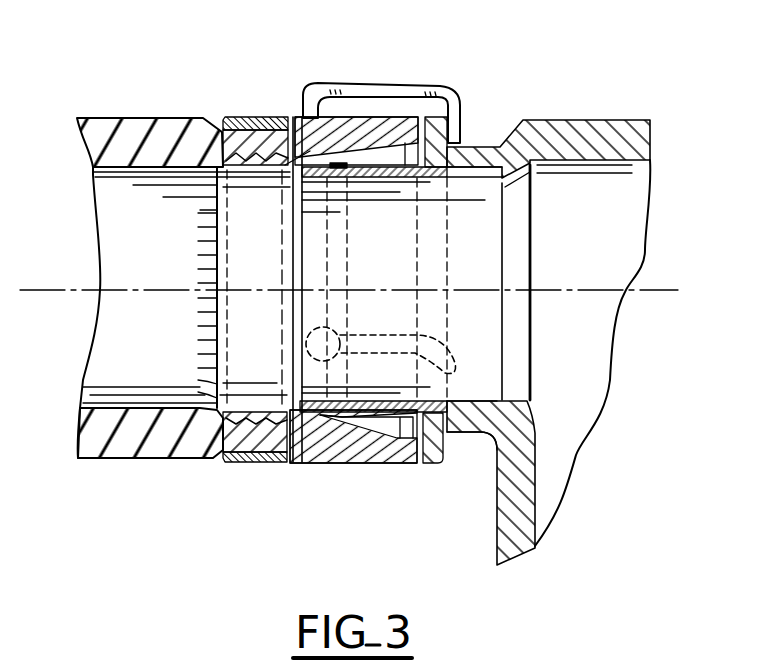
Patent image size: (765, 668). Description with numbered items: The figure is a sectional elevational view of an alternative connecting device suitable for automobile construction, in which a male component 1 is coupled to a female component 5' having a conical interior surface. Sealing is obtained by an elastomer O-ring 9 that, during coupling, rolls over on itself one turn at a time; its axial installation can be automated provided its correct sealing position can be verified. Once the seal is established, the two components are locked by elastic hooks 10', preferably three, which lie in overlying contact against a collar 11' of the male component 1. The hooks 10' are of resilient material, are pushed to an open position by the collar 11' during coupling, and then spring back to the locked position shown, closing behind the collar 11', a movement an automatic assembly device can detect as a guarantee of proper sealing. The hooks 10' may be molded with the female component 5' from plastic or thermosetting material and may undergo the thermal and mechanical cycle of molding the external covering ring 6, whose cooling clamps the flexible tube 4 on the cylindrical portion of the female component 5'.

The male component 1 is at (484, 145).
The flexible tube 4 is at (137, 143).
The female component 5' is at (341, 322).
The external covering ring 6 is at (259, 117).
The O-ring 9 is at (345, 168).
The elastic hooks 10' is at (397, 80).
The collar 11' is at (469, 501).